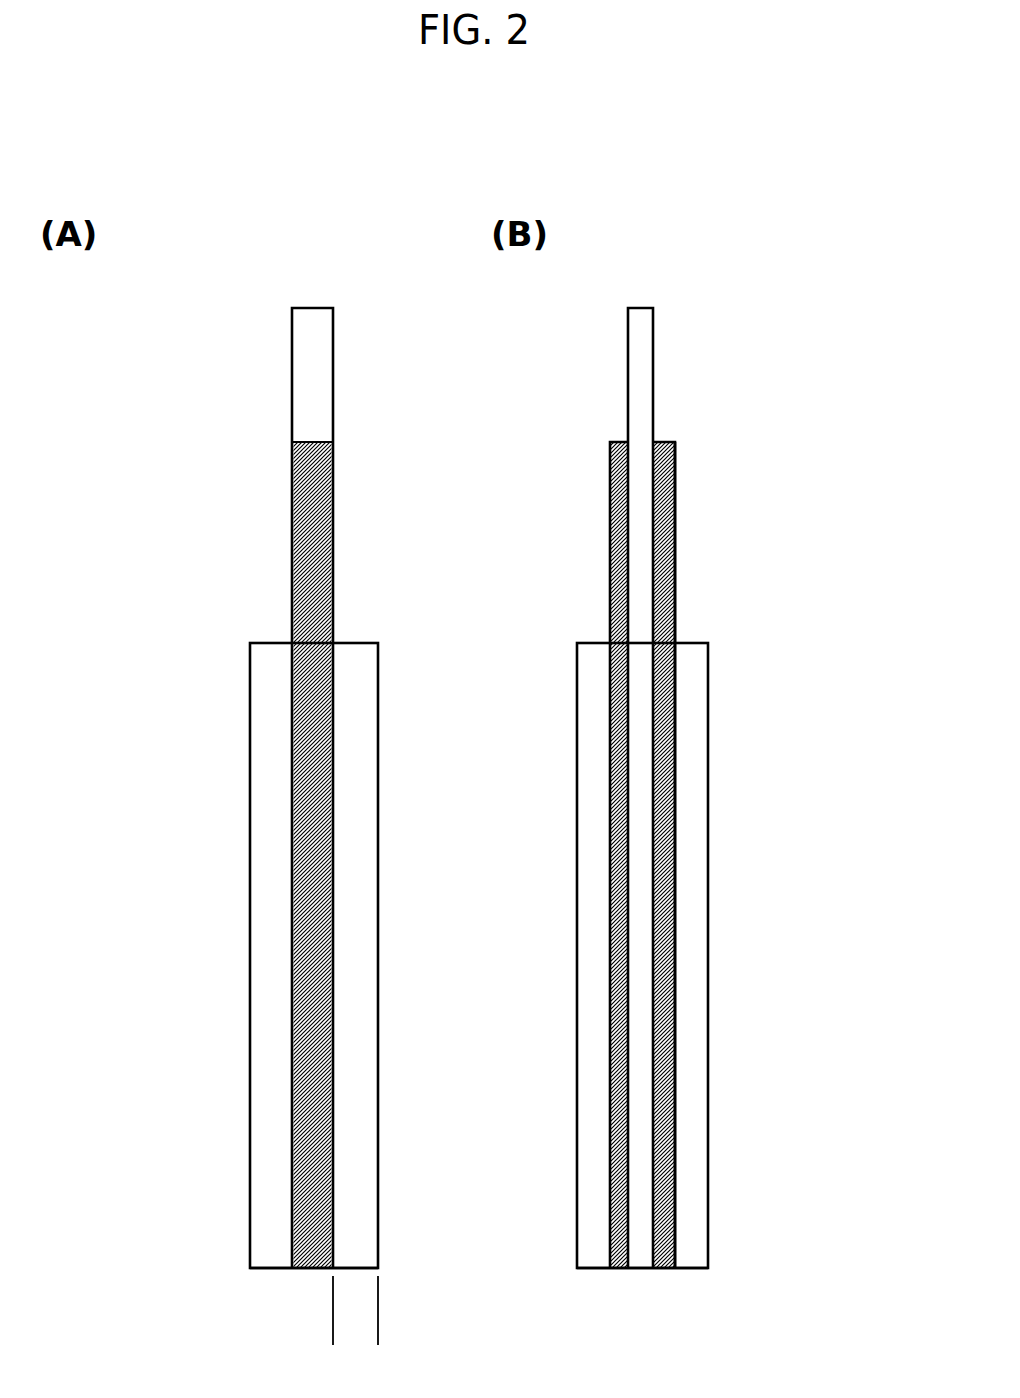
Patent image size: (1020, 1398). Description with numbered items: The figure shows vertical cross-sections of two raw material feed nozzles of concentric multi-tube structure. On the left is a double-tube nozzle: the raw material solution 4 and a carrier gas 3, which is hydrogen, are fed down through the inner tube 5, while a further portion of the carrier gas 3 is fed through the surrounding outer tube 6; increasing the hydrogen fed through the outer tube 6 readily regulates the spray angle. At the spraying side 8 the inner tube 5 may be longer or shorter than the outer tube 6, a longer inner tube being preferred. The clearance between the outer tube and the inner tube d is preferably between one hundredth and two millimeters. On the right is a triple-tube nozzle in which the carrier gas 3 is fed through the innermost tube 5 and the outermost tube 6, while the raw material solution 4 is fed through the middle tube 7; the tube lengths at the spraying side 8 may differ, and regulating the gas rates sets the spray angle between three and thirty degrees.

The carrier gas 3 is at (311, 372).
The raw material solution 4 is at (661, 470).
The inner tube 5 is at (293, 888).
The outer tube 6 is at (250, 1095).
The middle tube 7 is at (672, 770).
The spraying side 8 is at (280, 1268).
The clearance between the outer tube and the inner tube d is at (378, 1327).